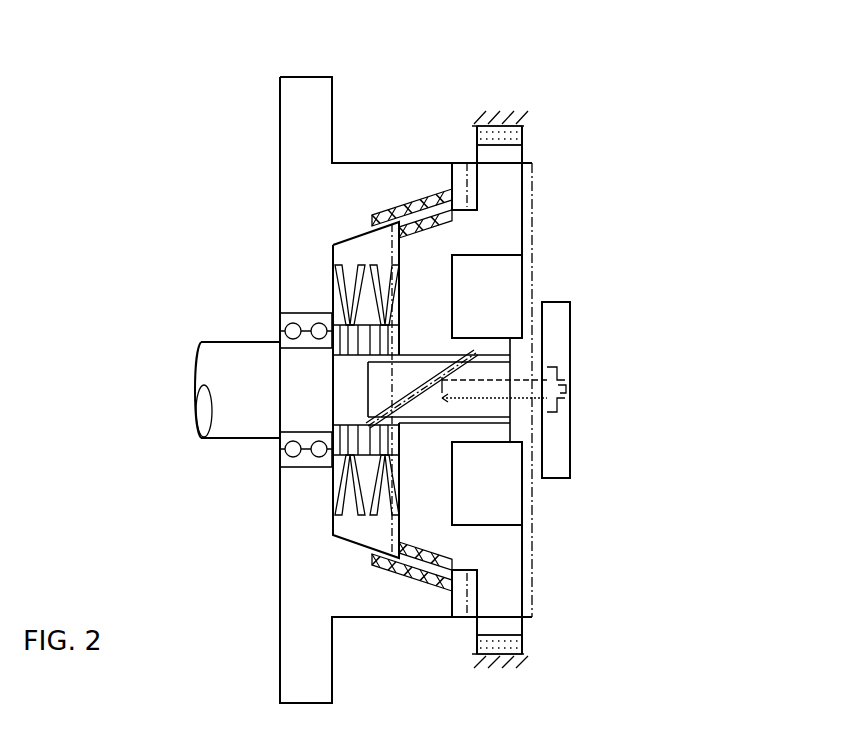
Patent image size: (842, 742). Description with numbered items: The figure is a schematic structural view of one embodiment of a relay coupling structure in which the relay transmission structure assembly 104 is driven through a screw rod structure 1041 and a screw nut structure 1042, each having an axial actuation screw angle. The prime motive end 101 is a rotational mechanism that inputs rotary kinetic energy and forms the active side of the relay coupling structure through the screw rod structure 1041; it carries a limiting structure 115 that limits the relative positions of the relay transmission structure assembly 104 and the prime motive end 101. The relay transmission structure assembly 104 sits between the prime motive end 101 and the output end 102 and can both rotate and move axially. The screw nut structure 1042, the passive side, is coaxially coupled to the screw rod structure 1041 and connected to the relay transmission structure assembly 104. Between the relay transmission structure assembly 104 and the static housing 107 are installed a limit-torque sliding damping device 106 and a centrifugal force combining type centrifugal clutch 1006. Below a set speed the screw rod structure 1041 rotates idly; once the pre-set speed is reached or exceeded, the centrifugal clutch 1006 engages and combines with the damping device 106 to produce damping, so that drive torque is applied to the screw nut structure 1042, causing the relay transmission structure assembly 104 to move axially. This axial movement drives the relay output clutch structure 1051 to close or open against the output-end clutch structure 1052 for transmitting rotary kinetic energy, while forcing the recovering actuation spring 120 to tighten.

The prime motive end 101 is at (228, 358).
The output end 102 is at (300, 125).
The relay transmission structure assembly 104 is at (533, 238).
The limit-torque sliding damping device 106 is at (523, 133).
The static housing 107 is at (482, 118).
The limiting structure 115 is at (560, 337).
The recovering actuation spring 120 is at (360, 267).
The centrifugal force combining type centrifugal clutch 1006 is at (510, 153).
The screw rod structure 1041 is at (368, 397).
The screw nut structure 1042 is at (425, 427).
The relay output clutch structure 1051 is at (440, 215).
The output-end clutch structure 1052 is at (393, 220).